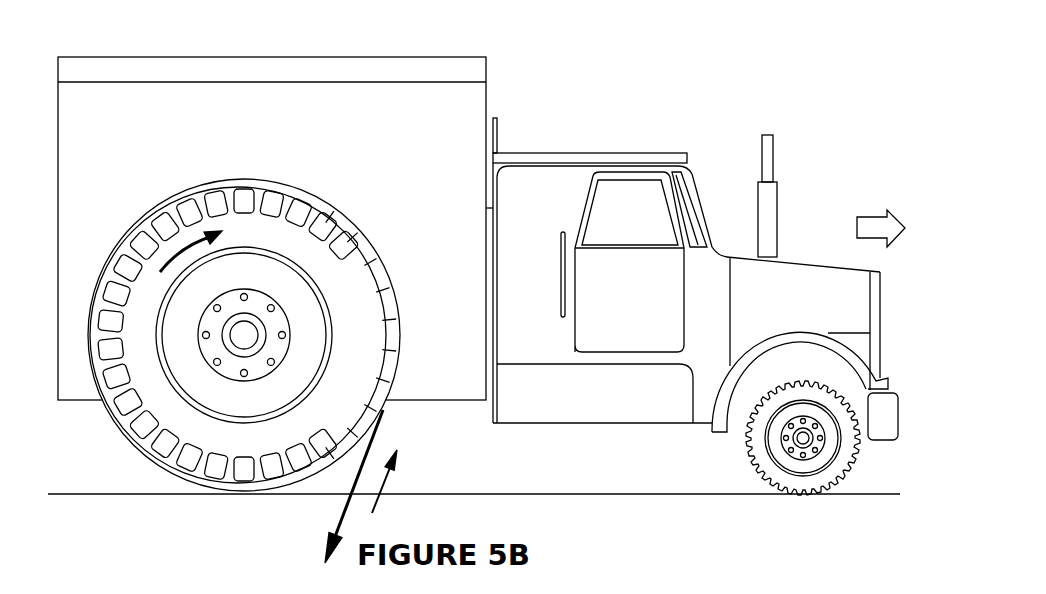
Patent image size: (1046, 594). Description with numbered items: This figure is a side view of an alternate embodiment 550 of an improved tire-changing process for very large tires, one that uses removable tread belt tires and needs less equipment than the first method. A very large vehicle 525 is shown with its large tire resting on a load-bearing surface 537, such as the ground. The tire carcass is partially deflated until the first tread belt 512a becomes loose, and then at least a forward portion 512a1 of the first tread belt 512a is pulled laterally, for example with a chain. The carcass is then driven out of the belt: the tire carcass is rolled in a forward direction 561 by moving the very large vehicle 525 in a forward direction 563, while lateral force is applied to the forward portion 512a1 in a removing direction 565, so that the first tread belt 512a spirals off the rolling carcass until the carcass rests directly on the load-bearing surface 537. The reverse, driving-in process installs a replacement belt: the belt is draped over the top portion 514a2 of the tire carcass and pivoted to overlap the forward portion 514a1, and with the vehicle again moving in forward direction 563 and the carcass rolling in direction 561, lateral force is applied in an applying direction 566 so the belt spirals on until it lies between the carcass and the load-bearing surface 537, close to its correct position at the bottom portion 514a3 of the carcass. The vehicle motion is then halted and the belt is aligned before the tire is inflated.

The very large vehicle 525 is at (203, 56).
The alternate embodiment of the tire-changing process 550 is at (572, 76).
The first tread belt 512a is at (158, 447).
The forward portion of the first tread belt 512a1 is at (378, 298).
The forward portion of the tire carcass 514a1 is at (388, 285).
The top portion of the tire carcass 514a2 is at (238, 197).
The bottom portion of the tire carcass 514a3 is at (240, 478).
The forward direction of rolling 561 is at (168, 250).
The forward direction of vehicle motion 563 is at (870, 217).
The removing direction 565 is at (348, 505).
The applying direction 566 is at (384, 481).
The load-bearing surface 537 is at (538, 494).